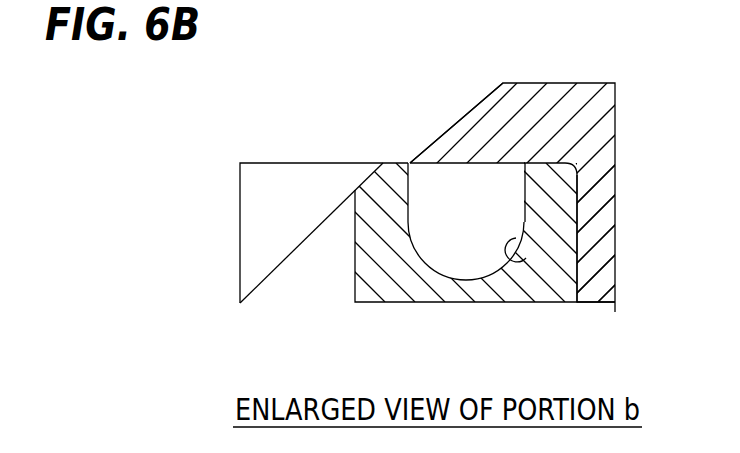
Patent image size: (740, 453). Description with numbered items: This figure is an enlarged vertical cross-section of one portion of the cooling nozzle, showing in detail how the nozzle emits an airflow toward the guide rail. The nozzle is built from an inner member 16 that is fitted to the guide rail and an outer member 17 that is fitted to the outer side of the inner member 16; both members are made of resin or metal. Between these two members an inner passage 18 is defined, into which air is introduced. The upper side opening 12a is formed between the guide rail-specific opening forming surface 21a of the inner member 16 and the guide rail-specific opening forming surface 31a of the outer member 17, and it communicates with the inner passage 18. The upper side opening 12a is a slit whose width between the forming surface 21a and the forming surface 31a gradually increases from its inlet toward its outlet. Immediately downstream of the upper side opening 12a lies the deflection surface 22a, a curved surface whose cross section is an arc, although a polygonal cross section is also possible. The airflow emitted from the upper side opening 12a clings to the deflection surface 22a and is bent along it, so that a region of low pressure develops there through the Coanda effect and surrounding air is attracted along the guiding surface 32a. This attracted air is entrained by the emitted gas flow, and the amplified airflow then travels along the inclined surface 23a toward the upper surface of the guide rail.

The upper side opening 12a is at (468, 57).
The guide rail-specific opening forming surface 31a is at (413, 172).
The guide rail-specific opening forming surface 21a is at (418, 176).
The guiding surface 32a is at (484, 99).
The outer member 17 is at (583, 98).
The deflection surface 22a is at (387, 161).
The inclined surface 23a is at (315, 229).
The inner member 16 is at (562, 232).
The inner passage 18 is at (613, 302).